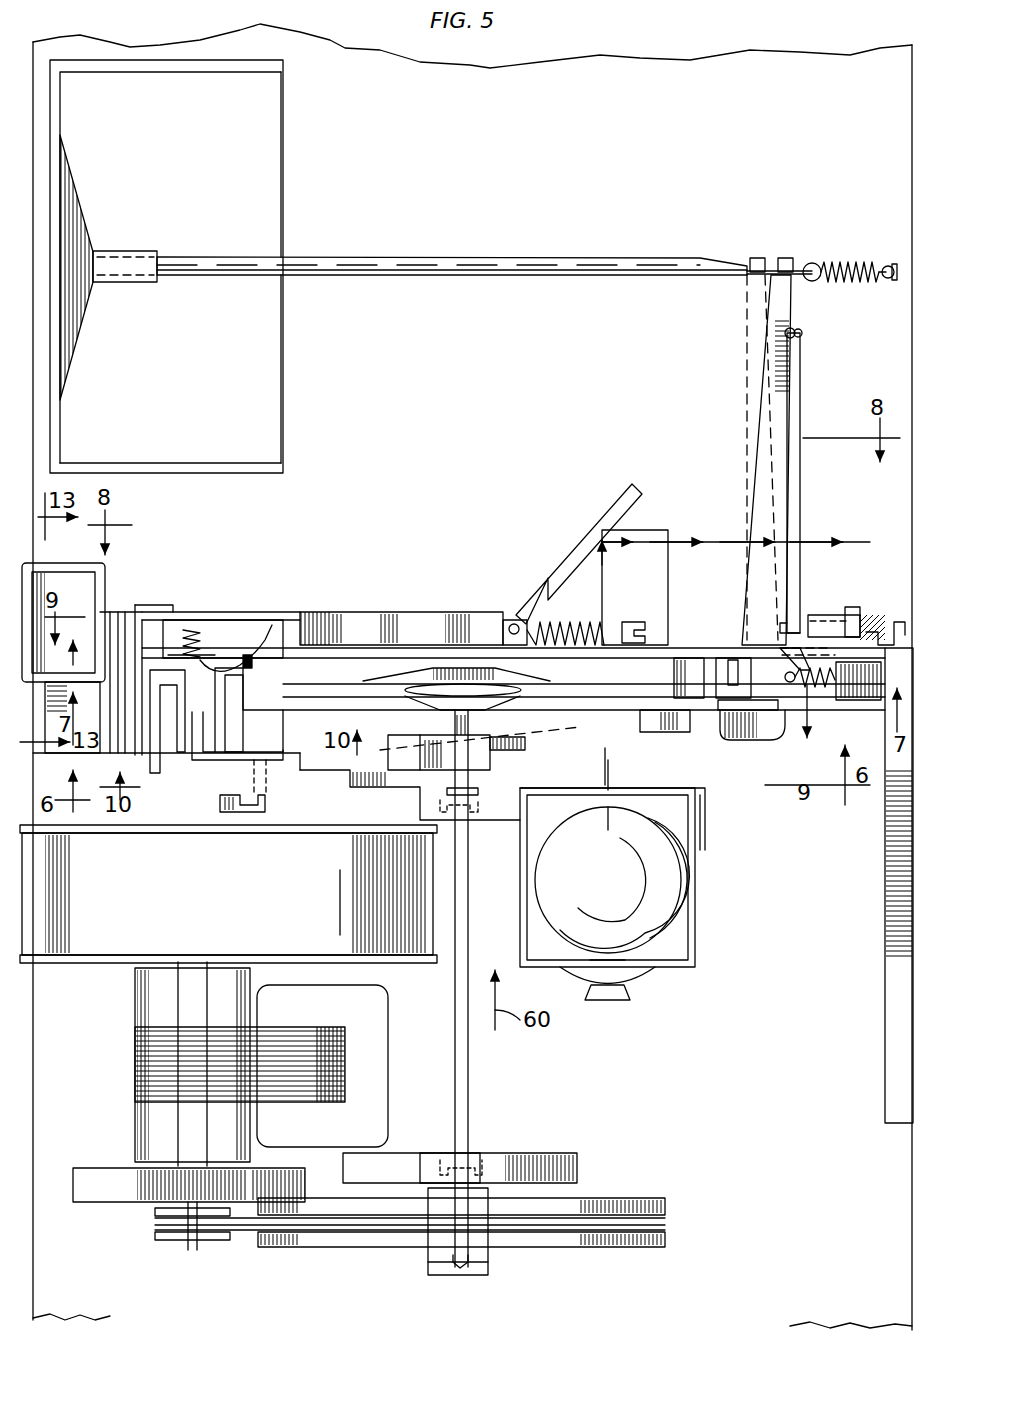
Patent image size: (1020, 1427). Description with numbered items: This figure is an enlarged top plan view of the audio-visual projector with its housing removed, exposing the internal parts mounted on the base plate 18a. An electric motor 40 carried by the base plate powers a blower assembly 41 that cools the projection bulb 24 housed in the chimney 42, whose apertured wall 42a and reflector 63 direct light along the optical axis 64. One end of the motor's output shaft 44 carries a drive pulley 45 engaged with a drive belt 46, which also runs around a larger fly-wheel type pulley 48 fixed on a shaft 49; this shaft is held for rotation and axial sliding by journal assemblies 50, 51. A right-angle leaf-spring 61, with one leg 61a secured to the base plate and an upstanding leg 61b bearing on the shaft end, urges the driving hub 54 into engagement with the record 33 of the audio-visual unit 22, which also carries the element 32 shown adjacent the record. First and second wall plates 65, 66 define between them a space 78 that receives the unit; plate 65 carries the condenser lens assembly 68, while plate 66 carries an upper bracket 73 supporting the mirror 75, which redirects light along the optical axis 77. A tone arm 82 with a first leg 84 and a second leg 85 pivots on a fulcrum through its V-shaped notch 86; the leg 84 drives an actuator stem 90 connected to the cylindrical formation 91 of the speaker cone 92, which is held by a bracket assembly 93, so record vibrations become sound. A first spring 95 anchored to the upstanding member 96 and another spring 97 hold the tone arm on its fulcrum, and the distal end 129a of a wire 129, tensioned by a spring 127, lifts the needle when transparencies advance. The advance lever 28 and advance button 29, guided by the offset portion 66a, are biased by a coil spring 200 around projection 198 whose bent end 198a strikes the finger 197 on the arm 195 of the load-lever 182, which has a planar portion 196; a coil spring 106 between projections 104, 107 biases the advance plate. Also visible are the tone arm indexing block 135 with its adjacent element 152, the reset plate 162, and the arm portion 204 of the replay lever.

The bracket assembly 93 is at (166, 266).
The speaker cone 92 is at (85, 210).
The cylindrical formation 91 is at (130, 250).
The actuator stem 90 is at (615, 258).
The first spring 95 is at (850, 262).
The upstanding member 96 is at (888, 282).
The tone arm 82 is at (765, 385).
The first leg 84 is at (755, 425).
The distal end of wire 129a is at (803, 333).
The wire 129 is at (800, 505).
The base plate 18a is at (452, 429).
The mirror 75 is at (610, 512).
The projection 104 is at (512, 620).
The coil spring 106 is at (562, 622).
The upper bracket 73 is at (660, 562).
The projection 107 is at (636, 620).
The optical axis 77 is at (728, 535).
The offset portion 66a is at (440, 612).
The audio-visual unit 22 is at (345, 655).
The space 78 is at (365, 680).
The plate 32 is at (590, 665).
The record 33 is at (312, 672).
The shaft 49 is at (468, 1095).
The load-lever 182 is at (495, 770).
The driving hub 54 is at (530, 750).
The planar portion 196 is at (365, 787).
The journal assembly 50 is at (478, 820).
The advance button 29 is at (105, 578).
The advance lever 28 is at (190, 620).
The coil spring 200 is at (197, 625).
The projection 198 is at (212, 640).
The bent end portion 198a is at (272, 625).
The finger 197 is at (178, 721).
The arm 195 is at (198, 760).
The tone arm indexing block 135 is at (250, 710).
The pin 152 is at (264, 675).
The reset plate 162 is at (268, 810).
The second wall plate 66 is at (700, 655).
The condenser lens assembly 68 is at (651, 722).
The optical axis 64 is at (608, 770).
The first wall plate 65 is at (712, 710).
The second leg 85 is at (740, 740).
The V-shaped notch 86 is at (800, 660).
The spring 127 is at (875, 615).
The arm portion 204 is at (845, 745).
The spring 97 is at (820, 760).
The blower assembly 41 is at (228, 894).
The electric motor 40 is at (150, 1017).
The chimney 42 is at (695, 890).
The wall of chimney 42a is at (672, 828).
The projection bulb 24 is at (612, 856).
The reflector 63 is at (640, 975).
The drive belt 46 is at (245, 1228).
The journal assembly 51 is at (537, 1153).
The output shaft 44 is at (195, 1248).
The drive pulley 45 is at (155, 1232).
The fly-wheel type pulley 48 is at (630, 1250).
The leaf-spring 61 is at (490, 1262).
The leg 61a is at (428, 1262).
The upstanding leg 61b is at (445, 1275).